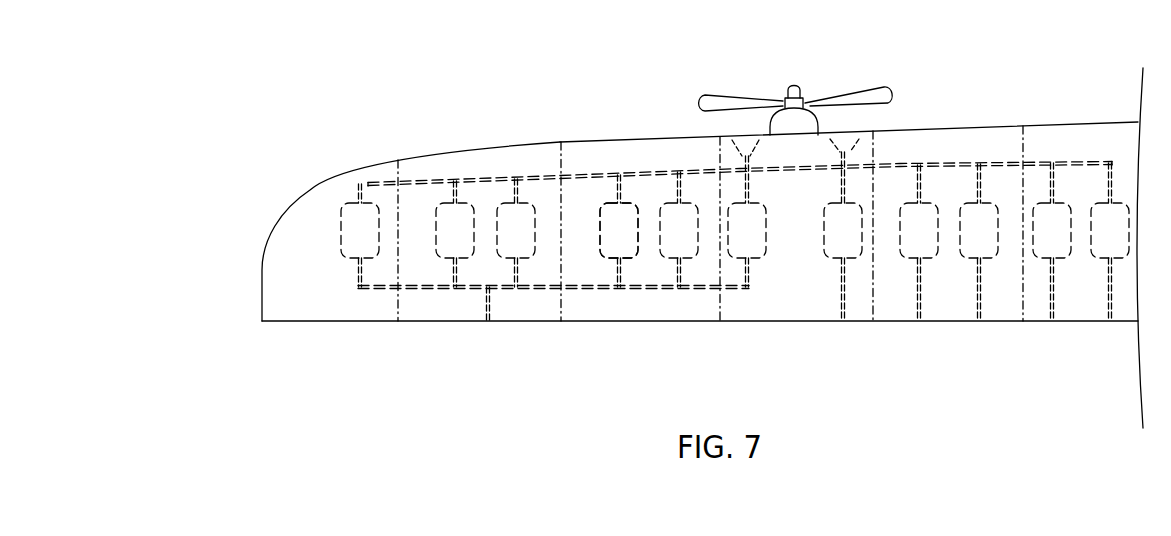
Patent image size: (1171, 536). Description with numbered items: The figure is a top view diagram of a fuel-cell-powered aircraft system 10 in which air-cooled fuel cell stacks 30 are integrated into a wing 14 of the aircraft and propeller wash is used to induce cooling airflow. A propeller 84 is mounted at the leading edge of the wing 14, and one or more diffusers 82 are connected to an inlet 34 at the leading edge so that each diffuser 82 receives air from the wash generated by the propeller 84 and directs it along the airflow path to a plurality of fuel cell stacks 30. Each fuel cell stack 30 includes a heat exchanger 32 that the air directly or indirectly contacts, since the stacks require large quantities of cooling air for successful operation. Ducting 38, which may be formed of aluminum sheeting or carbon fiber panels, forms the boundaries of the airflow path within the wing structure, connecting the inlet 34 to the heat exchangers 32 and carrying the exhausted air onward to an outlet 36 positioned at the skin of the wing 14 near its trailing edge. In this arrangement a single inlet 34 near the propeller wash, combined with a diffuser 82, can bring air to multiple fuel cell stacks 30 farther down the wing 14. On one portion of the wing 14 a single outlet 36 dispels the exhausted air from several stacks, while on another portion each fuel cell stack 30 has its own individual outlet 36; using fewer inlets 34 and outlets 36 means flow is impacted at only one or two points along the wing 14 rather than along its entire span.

The fuel-cell-powered aircraft system 10 is at (694, 235).
The wing 14 is at (262, 257).
The fuel cell stack 30 is at (638, 258).
The heat exchanger 32 is at (618, 237).
The inlet 34 is at (706, 135).
The outlet 36 is at (488, 322).
The ducting 38 is at (640, 172).
The diffuser 82 is at (748, 138).
The propeller 84 is at (866, 86).